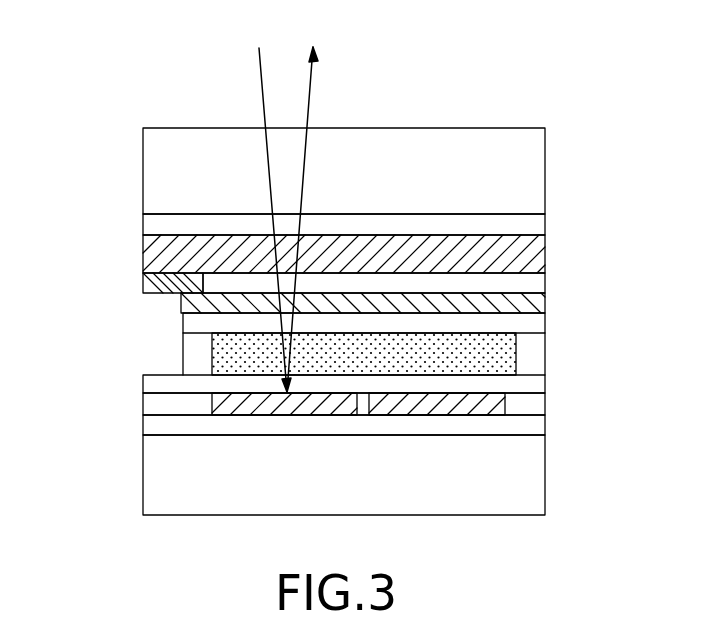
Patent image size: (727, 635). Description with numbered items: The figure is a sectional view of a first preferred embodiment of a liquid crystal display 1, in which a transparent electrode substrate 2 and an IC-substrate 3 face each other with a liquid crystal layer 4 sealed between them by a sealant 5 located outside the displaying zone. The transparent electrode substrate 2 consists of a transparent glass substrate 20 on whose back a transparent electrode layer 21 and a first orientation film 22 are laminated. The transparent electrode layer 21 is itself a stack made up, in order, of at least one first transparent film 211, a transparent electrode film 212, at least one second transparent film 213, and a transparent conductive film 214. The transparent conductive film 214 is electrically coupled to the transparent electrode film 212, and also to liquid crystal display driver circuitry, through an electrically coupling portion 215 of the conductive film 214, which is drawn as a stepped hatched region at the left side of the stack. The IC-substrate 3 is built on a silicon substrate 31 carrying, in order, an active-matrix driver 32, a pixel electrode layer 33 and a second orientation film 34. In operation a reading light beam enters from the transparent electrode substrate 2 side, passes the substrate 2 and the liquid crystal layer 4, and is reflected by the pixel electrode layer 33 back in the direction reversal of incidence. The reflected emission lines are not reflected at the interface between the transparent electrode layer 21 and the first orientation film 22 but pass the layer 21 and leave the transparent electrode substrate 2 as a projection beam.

The liquid crystal display 1 is at (60, 45).
The transparent electrode substrate 2 is at (102, 128).
The IC-substrate 3 is at (97, 387).
The liquid crystal layer 4 is at (225, 348).
The sealant 5 is at (532, 353).
The transparent glass substrate 20 is at (532, 180).
The transparent electrode layer 21 is at (657, 197).
The first orientation film 22 is at (531, 327).
The first transparent film 211 is at (535, 228).
The transparent electrode film 212 is at (535, 255).
The second transparent film 213 is at (535, 287).
The transparent conductive film 214 is at (535, 307).
The electrically coupling portion 215 is at (178, 285).
The silicon substrate 31 is at (524, 468).
The active-matrix driver 32 is at (527, 423).
The pixel electrode layer 33 is at (531, 402).
The second orientation film 34 is at (531, 383).